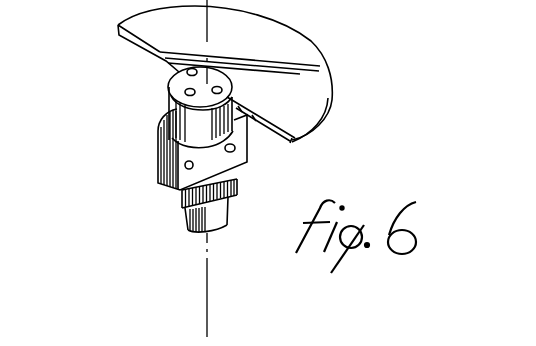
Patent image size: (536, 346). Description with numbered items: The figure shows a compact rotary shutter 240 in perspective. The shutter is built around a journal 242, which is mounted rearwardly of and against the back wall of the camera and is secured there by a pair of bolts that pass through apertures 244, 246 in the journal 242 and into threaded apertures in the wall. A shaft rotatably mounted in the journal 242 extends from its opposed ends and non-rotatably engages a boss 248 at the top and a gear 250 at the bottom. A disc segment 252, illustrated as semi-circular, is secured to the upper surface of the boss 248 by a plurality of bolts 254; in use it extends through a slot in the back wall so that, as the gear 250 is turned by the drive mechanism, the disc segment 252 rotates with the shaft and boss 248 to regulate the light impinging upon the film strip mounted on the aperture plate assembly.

The rotary shutter 240 is at (400, 160).
The journal 242 is at (158, 153).
The aperture 244 is at (186, 168).
The aperture 246 is at (236, 149).
The boss 248 is at (166, 109).
The gear 250 is at (186, 210).
The disc segment 252 is at (322, 64).
The bolts 254 is at (180, 70).